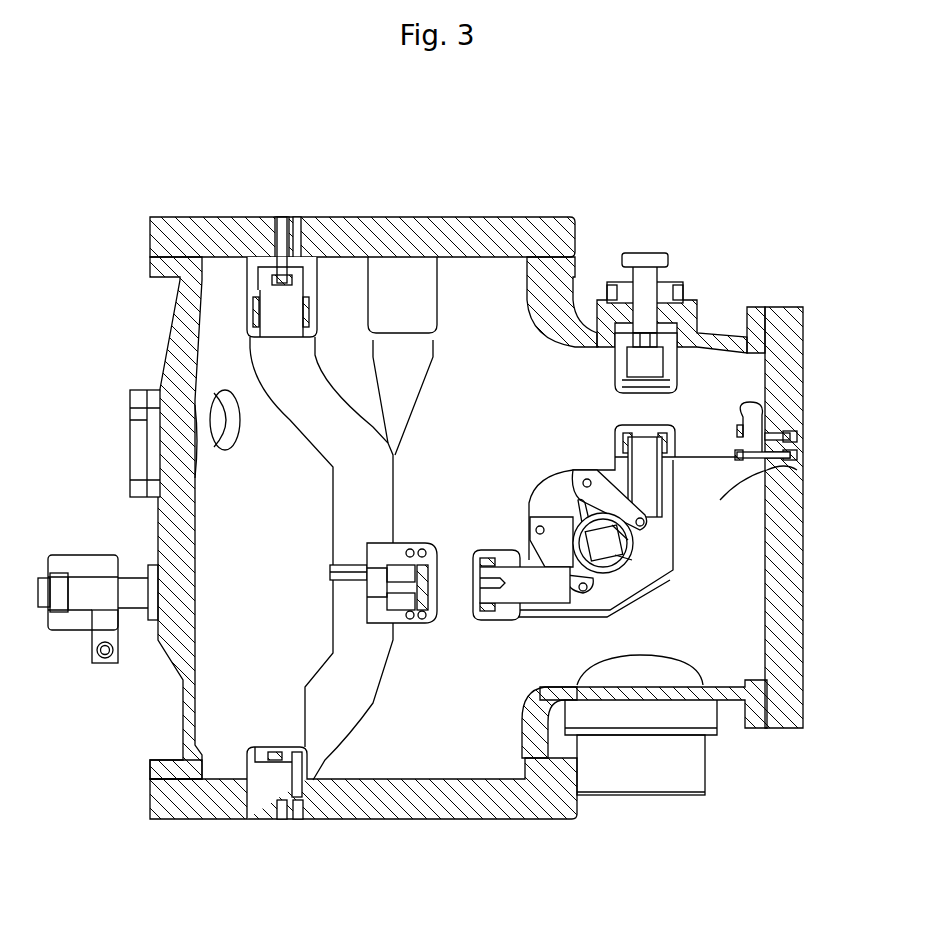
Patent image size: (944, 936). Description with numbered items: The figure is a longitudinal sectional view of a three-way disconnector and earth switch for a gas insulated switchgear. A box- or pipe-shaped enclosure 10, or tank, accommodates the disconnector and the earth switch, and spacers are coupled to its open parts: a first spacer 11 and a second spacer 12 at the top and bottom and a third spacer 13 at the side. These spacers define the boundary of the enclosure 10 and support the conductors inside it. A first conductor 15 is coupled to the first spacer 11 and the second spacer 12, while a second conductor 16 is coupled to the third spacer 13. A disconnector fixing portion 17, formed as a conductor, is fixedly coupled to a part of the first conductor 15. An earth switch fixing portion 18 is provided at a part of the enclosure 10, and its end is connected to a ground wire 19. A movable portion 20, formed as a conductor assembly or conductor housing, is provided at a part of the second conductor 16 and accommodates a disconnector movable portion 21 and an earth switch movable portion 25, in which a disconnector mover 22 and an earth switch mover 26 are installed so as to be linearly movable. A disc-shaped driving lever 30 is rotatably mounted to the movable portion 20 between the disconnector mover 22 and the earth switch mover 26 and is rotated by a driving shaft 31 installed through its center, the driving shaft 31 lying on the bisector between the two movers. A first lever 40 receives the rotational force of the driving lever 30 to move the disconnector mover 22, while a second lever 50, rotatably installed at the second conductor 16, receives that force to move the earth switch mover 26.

The enclosure 10 is at (172, 362).
The first spacer 11 is at (352, 235).
The second spacer 12 is at (408, 798).
The third spacer 13 is at (790, 646).
The first conductor 15 is at (355, 502).
The second conductor 16 is at (735, 478).
The disconnector fixing portion 17 is at (367, 549).
The earth switch fixing portion 18 is at (686, 300).
The ground wire 19 is at (646, 262).
The movable portion 20 is at (555, 497).
The disconnector movable portion 21 is at (550, 613).
The disconnector mover 22 is at (528, 588).
The earth switch movable portion 25 is at (680, 457).
The earth switch mover 26 is at (650, 487).
The driving lever 30 is at (627, 560).
The driving shaft 31 is at (632, 548).
The first lever 40 is at (550, 497).
The second lever 50 is at (597, 477).